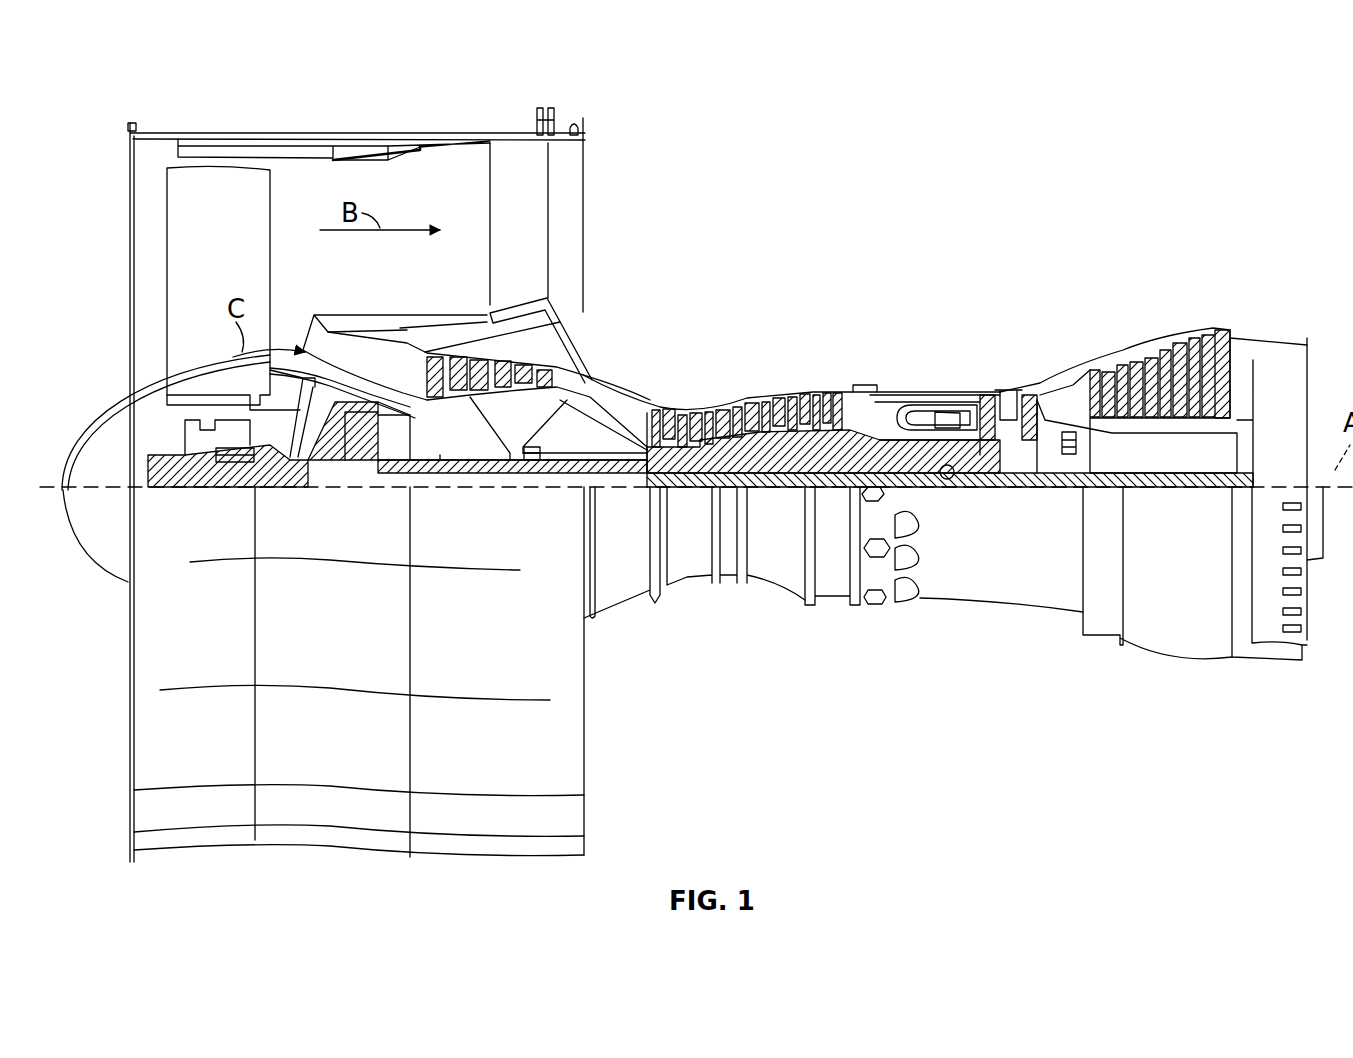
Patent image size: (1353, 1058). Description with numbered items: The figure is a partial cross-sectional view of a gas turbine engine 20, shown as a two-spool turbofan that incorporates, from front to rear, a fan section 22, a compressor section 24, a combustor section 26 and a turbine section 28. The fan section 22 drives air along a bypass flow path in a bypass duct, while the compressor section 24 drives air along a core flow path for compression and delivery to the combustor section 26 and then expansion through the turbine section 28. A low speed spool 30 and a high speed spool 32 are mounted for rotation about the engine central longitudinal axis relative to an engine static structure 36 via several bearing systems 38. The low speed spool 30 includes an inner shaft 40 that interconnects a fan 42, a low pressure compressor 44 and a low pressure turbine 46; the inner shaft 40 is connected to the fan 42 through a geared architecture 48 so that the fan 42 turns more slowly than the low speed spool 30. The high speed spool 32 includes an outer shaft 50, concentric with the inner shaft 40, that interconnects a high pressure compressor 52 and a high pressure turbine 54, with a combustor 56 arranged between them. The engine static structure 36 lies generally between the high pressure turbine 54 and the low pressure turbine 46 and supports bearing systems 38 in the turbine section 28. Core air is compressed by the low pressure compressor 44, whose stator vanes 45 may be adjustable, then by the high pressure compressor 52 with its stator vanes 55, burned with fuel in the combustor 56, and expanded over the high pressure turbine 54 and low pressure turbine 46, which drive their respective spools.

The gas turbine engine 20 is at (1138, 174).
The fan section 22 is at (130, 108).
The compressor section 24 is at (768, 352).
The combustor section 26 is at (925, 352).
The turbine section 28 is at (1062, 340).
The low speed spool 30 is at (795, 495).
The high speed spool 32 is at (860, 440).
The engine static structure 36 is at (835, 600).
The bearing systems 38 is at (220, 472).
The inner shaft 40 is at (600, 490).
The fan 42 is at (213, 259).
The low pressure compressor 44 is at (540, 345).
The stator vanes 45 is at (460, 357).
The low pressure turbine 46 is at (1178, 355).
The geared architecture 48 is at (355, 452).
The outer shaft 50 is at (955, 468).
The high pressure compressor 52 is at (758, 456).
The high pressure turbine 54 is at (1007, 390).
The stator vanes 55 is at (668, 410).
The combustor 56 is at (935, 412).